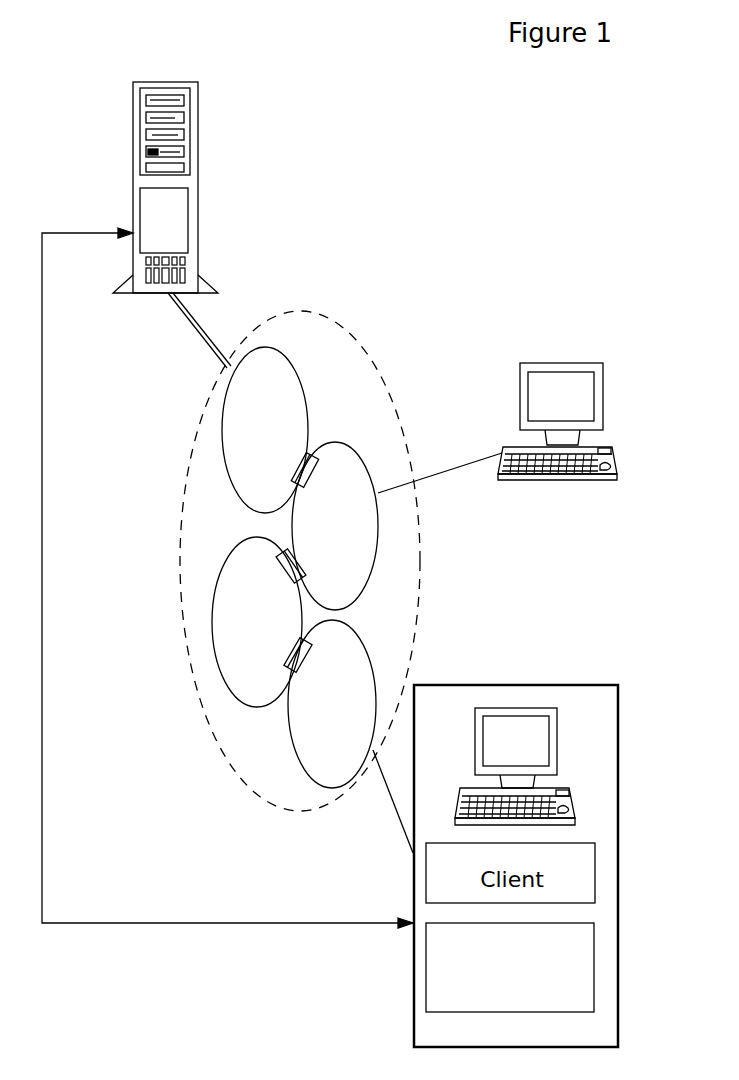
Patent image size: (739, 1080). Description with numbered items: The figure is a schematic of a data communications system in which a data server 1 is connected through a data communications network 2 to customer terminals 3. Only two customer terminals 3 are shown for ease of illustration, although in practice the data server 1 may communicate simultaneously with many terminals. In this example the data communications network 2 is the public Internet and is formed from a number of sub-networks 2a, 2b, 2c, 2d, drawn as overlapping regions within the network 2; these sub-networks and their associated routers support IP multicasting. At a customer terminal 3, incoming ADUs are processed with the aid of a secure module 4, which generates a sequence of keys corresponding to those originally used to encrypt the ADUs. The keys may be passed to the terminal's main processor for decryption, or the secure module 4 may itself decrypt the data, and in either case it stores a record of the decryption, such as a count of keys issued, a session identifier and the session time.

The data server 1 is at (196, 186).
The data communications network 2 is at (315, 332).
The sub-network 2a is at (265, 430).
The sub-network 2b is at (335, 526).
The sub-network 2c is at (257, 622).
The sub-network 2d is at (332, 704).
The customer terminal 3 is at (617, 458).
The secure module 4 is at (577, 975).